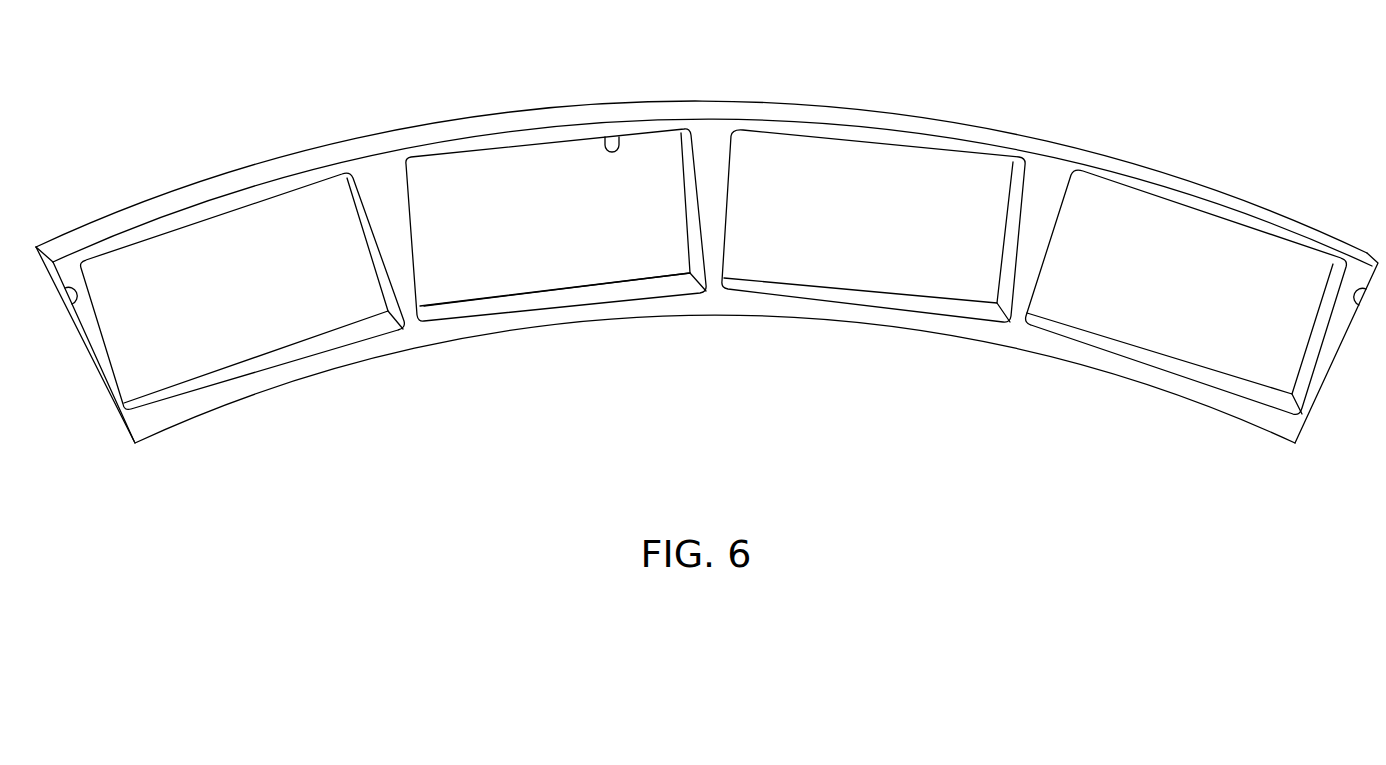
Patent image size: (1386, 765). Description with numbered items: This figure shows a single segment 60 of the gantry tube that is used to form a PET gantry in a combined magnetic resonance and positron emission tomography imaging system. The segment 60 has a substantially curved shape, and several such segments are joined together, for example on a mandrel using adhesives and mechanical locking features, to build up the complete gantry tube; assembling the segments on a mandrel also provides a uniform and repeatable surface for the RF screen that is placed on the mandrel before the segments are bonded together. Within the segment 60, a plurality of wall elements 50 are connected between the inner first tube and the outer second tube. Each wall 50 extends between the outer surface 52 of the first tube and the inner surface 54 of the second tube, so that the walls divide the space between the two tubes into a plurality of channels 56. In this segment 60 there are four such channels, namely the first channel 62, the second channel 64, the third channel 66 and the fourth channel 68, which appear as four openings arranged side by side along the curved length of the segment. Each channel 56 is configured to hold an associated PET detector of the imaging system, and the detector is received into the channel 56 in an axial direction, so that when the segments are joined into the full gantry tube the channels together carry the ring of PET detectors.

The wall element 50 is at (88, 320).
The outer surface of the first tube 52 is at (535, 293).
The inner surface of the second tube 54 is at (616, 146).
The channel 56 is at (203, 243).
The segment 60 is at (1042, 150).
The first channel 62 is at (152, 380).
The second channel 64 is at (453, 290).
The third channel 66 is at (763, 268).
The fourth channel 68 is at (1062, 317).